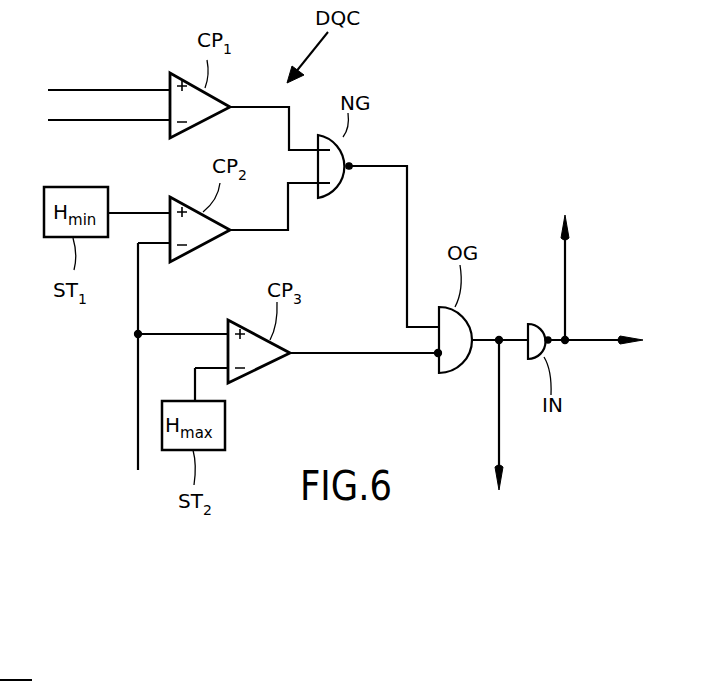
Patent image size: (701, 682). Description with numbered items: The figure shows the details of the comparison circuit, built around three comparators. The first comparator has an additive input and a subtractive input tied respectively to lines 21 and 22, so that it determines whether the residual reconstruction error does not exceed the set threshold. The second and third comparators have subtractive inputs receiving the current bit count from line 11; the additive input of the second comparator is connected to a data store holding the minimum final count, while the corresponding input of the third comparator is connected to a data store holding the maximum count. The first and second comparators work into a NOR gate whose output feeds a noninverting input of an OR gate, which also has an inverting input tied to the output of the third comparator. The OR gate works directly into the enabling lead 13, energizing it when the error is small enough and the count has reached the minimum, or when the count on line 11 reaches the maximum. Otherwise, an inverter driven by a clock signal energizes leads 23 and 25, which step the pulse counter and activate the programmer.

The line 21 is at (90, 88).
The line 22 is at (85, 123).
The line 11 is at (137, 370).
The enabling lead 13 is at (497, 410).
The lead 23 is at (608, 343).
The lead 25 is at (566, 262).